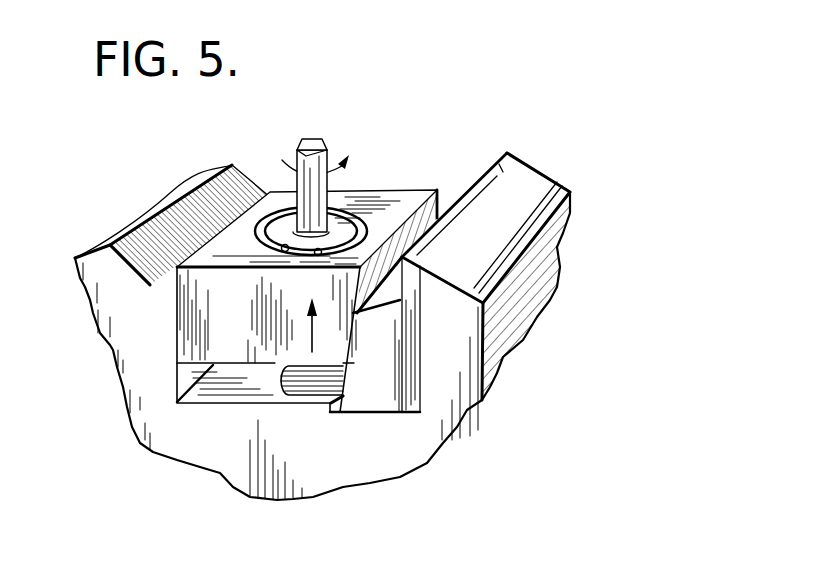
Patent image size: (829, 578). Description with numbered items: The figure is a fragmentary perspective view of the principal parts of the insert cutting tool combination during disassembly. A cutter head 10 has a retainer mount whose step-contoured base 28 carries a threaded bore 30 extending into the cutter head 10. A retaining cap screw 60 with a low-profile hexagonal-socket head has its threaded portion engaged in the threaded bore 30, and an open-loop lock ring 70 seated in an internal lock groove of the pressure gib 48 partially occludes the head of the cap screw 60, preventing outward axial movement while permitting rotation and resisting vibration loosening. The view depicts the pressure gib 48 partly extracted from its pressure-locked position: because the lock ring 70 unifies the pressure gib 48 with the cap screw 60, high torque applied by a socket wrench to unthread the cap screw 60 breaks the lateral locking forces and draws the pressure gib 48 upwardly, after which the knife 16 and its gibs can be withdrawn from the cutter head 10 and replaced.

The cutter head 10 is at (512, 201).
The knife 16 is at (510, 155).
The base 28 is at (380, 395).
The threaded bore 30 is at (287, 393).
The pressure gib 48 is at (360, 252).
The cap screw 60 is at (342, 207).
The lock ring 70 is at (352, 226).